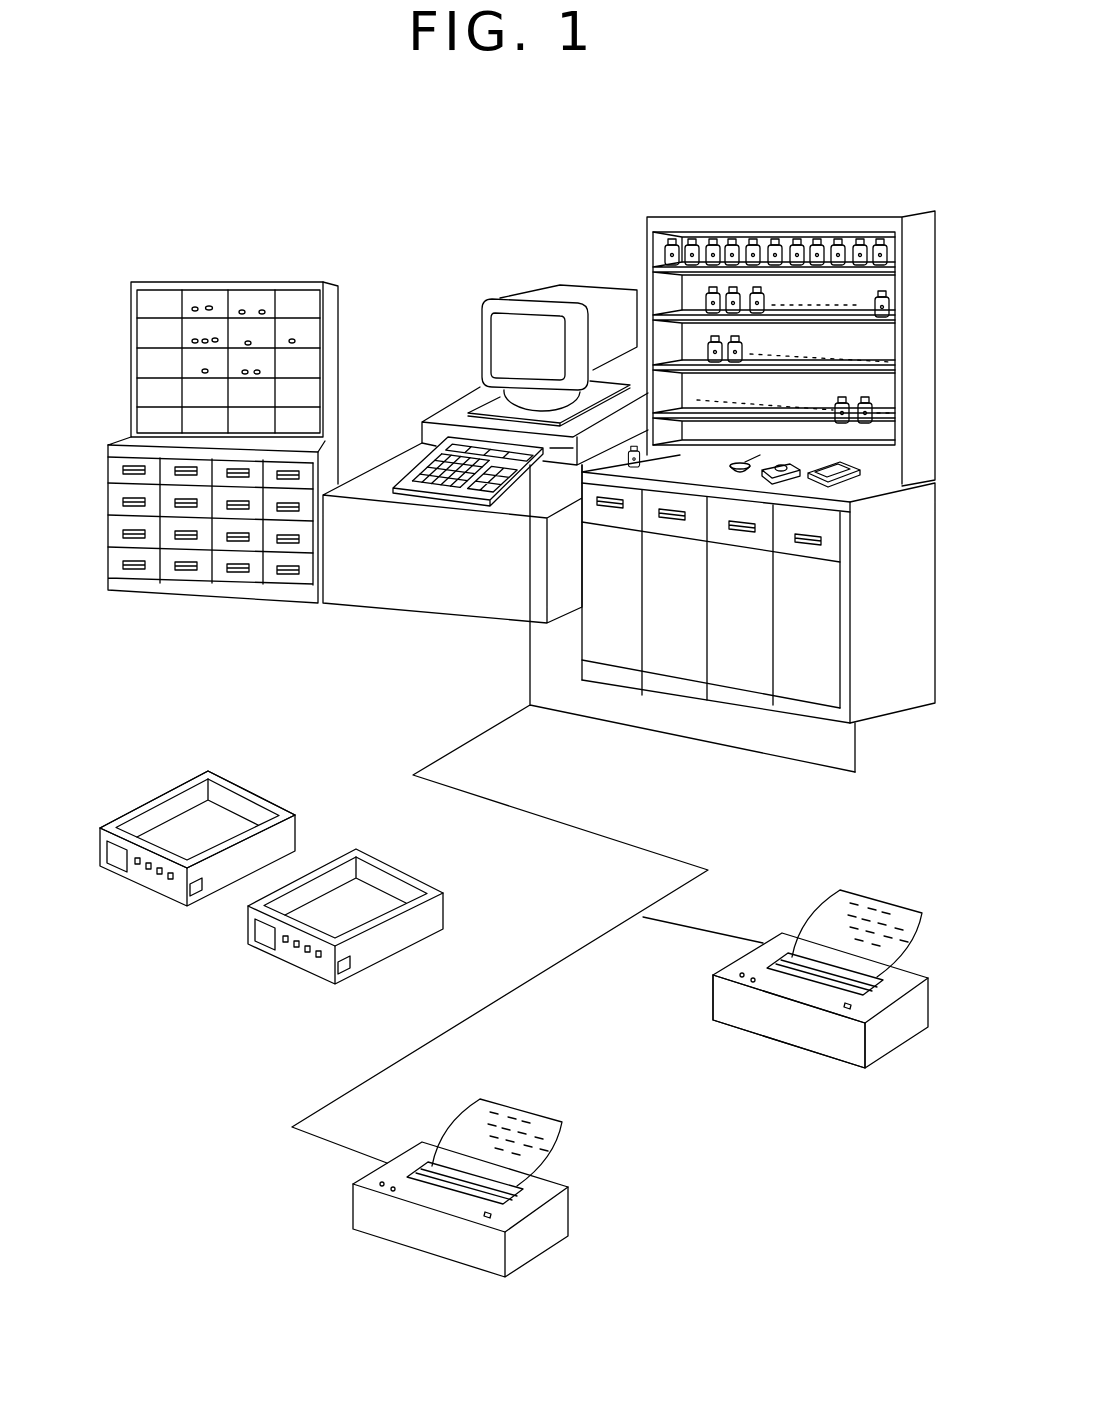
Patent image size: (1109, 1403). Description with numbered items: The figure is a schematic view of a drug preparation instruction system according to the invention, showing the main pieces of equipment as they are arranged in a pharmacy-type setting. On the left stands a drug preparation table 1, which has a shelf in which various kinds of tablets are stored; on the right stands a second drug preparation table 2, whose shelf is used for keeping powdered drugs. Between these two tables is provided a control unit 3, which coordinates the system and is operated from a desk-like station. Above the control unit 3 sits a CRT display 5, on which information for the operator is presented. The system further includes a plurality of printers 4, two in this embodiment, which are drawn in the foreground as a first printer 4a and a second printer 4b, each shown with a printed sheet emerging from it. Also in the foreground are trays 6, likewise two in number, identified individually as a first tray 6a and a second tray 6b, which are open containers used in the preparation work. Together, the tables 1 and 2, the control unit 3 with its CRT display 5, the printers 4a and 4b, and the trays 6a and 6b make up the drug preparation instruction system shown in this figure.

The drug preparation table 1 is at (272, 277).
The drug preparation table 2 is at (826, 212).
The control unit 3 is at (400, 432).
The printers 4 is at (772, 921).
The printer 4a is at (708, 1003).
The printer 4b is at (362, 1242).
The CRT display 5 is at (537, 300).
The trays 6 is at (137, 790).
The tray 6a is at (192, 776).
The tray 6b is at (367, 852).